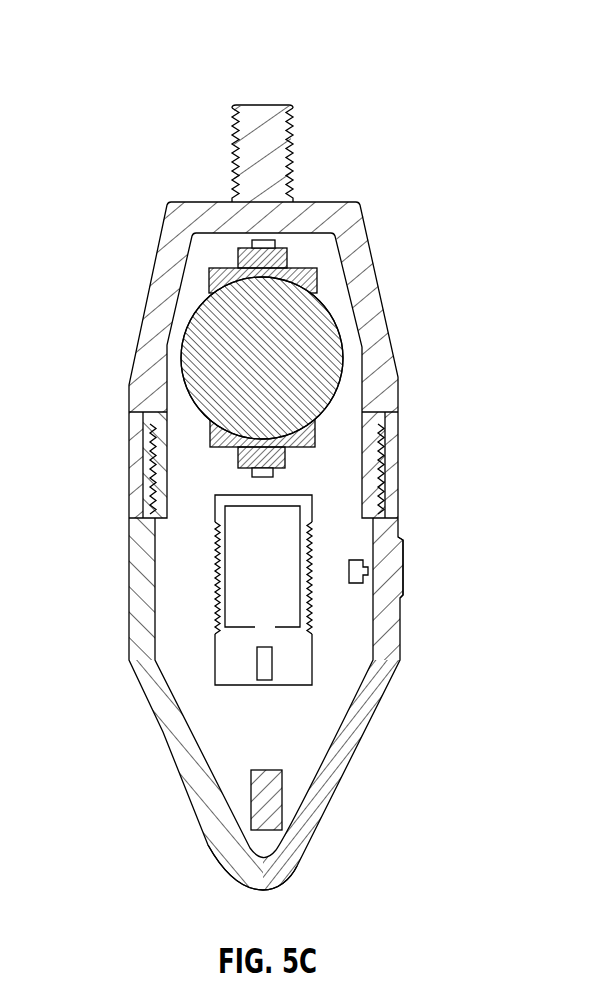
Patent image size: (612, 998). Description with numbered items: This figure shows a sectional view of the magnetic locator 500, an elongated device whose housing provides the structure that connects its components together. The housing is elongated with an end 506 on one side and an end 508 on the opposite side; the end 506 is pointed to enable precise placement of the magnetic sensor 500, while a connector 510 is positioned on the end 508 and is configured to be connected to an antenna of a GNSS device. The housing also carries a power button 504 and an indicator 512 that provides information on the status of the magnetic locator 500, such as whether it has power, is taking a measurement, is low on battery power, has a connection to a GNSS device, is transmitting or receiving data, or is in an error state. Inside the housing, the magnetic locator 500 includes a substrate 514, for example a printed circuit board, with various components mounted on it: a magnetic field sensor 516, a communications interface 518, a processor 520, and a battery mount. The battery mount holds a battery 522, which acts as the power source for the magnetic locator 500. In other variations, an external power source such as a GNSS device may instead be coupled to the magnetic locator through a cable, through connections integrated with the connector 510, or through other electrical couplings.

The magnetic sensor 500 is at (128, 46).
The power button 504 is at (403, 572).
The end 506 is at (264, 890).
The end 508 is at (192, 208).
The connector 510 is at (238, 112).
The indicator 512 is at (271, 671).
The substrate 514 is at (170, 542).
The magnetic field sensor 516 is at (230, 782).
The communications interface 518 is at (272, 660).
The processor 520 is at (265, 530).
The battery 522 is at (290, 345).